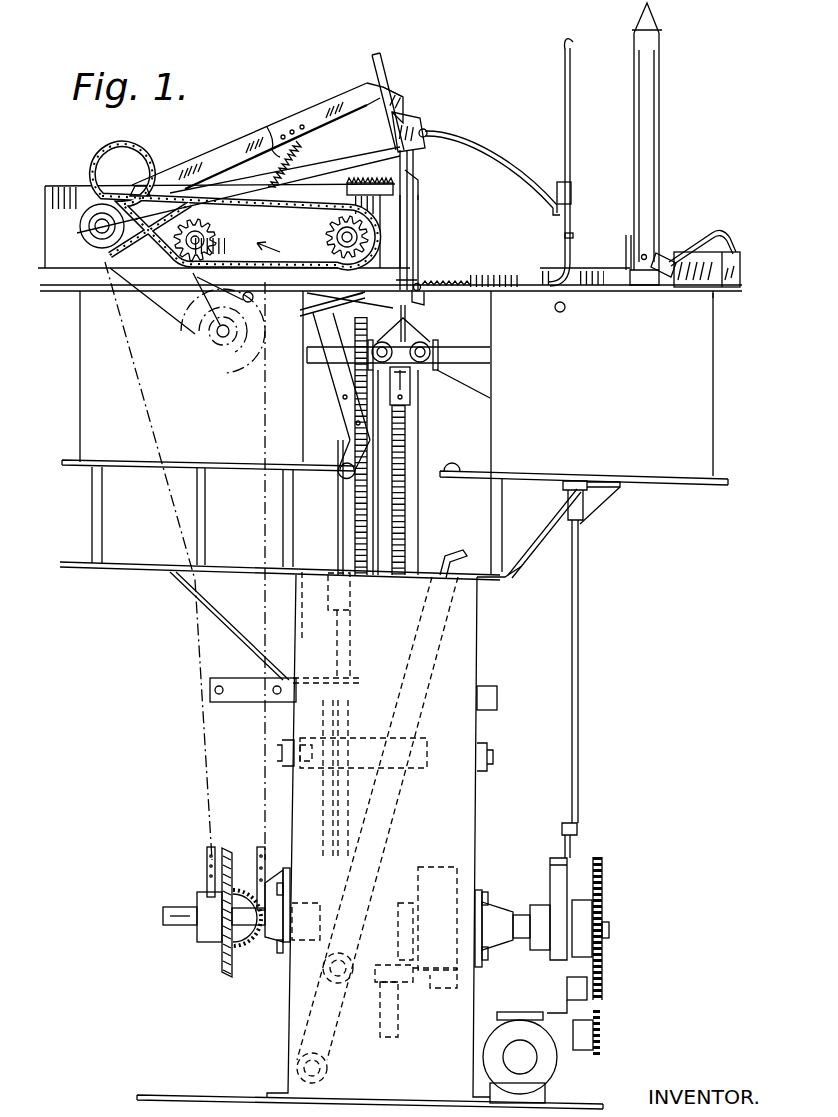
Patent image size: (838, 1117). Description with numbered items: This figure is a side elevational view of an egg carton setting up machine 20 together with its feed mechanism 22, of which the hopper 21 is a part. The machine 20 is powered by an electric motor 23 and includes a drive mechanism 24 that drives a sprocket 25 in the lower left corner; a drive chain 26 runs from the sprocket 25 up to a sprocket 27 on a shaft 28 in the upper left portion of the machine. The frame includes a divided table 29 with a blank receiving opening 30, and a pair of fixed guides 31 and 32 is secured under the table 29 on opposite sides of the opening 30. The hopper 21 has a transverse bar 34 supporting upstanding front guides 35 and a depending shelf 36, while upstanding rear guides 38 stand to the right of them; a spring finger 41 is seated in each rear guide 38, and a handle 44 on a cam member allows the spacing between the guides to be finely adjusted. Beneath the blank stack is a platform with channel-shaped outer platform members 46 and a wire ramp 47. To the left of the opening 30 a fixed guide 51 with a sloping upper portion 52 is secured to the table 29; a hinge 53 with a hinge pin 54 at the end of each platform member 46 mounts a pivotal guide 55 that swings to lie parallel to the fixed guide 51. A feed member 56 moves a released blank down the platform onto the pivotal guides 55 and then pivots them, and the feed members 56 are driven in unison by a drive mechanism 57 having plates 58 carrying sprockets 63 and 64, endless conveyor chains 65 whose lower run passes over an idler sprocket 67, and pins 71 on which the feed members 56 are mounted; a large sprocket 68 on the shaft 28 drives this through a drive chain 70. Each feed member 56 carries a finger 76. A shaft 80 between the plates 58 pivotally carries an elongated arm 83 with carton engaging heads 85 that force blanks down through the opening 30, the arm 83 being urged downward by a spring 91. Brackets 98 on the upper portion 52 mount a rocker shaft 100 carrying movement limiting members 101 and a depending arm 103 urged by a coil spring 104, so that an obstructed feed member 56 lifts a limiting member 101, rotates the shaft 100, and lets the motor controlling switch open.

The egg carton setting up machine 20 is at (192, 790).
The hopper 21 is at (684, 162).
The feed mechanism 22 is at (210, 150).
The electric motor 23 is at (550, 1072).
The drive mechanism 24 is at (603, 880).
The sprocket 25 is at (238, 880).
The drive chain 26 is at (207, 866).
The sprocket 27 is at (205, 374).
The shaft 28 is at (216, 336).
The divided table 29 is at (56, 278).
The blank receiving passage or opening 30 is at (420, 285).
The fixed guide 31 is at (366, 296).
The fixed guide 32 is at (418, 298).
The transverse bar 34 is at (558, 184).
The front guides 35 is at (571, 172).
The depending shelf 36 is at (573, 233).
The rear guides 38 is at (660, 124).
The spring finger 41 is at (628, 234).
The handle 44 is at (661, 256).
The outer platform members 46 is at (735, 281).
The wire ramp 47 is at (716, 236).
The fixed guide 51 is at (414, 250).
The sloping upper portion 52 is at (379, 58).
The hinge 53 is at (470, 285).
The hinge pin 54 is at (445, 283).
The pivotal guide 55 is at (420, 206).
The feed member 56 is at (332, 160).
The drive mechanism 57 is at (113, 188).
The plates 58 is at (76, 186).
The sprockets 63 is at (80, 220).
The sprockets 64 is at (334, 245).
The endless conveyor chains 65 is at (272, 202).
The idler sprocket 67 is at (216, 250).
The large sprocket 68 is at (255, 325).
The drive chain 70 is at (156, 313).
The pins 71 is at (84, 246).
The finger 76 is at (292, 174).
The shaft 80 is at (141, 186).
The elongated arm 83 is at (308, 111).
The carton engaging heads 85 is at (400, 112).
The spring 91 is at (266, 142).
The brackets 98 is at (408, 122).
The rocker shaft 100 is at (428, 132).
The movement limiting members 101 is at (505, 146).
The depending arm 103 is at (416, 182).
The coil spring 104 is at (360, 178).